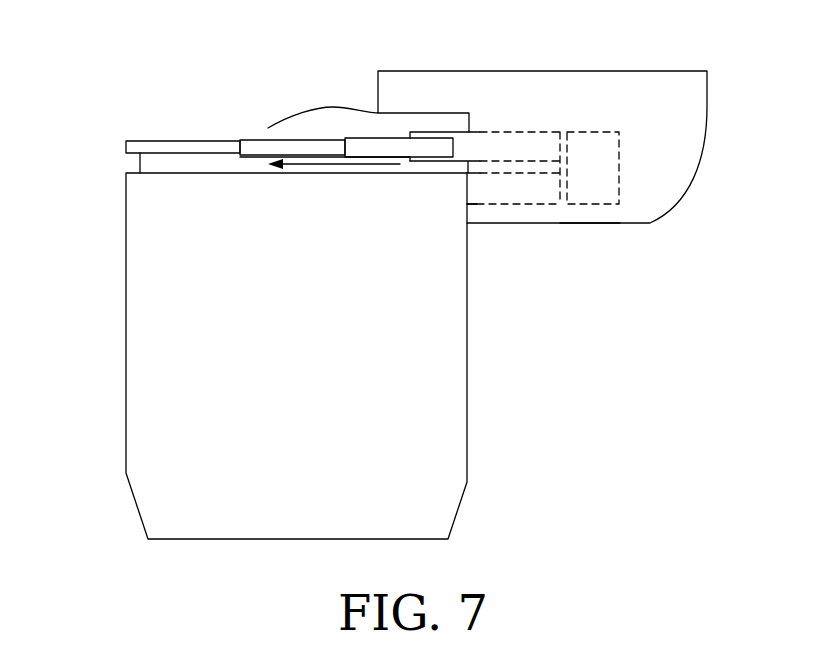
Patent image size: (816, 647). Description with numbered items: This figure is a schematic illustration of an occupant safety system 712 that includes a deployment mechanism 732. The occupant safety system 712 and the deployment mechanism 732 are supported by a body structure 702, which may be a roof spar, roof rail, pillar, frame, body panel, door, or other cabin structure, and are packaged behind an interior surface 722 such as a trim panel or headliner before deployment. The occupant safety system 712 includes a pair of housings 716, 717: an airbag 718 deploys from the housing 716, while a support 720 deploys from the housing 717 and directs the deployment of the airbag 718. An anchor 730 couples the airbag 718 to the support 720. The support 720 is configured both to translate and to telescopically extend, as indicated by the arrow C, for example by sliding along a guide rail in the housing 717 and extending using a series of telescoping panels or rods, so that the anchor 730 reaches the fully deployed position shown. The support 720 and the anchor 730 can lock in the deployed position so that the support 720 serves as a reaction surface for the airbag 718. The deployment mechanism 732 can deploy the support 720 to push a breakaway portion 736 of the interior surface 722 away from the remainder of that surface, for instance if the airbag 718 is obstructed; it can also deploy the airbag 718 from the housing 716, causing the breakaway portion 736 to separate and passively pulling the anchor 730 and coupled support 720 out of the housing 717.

The occupant safety system 712 is at (82, 58).
The body structure 702 is at (685, 71).
The airbag 718 is at (125, 357).
The anchor 730 is at (138, 162).
The support 720 is at (213, 140).
The breakaway portion 736 is at (327, 107).
The housing 717 is at (505, 132).
The deployment mechanism 732 is at (620, 157).
The housing 716 is at (510, 204).
The interior surface 722 is at (590, 223).
The arrow C is at (317, 167).